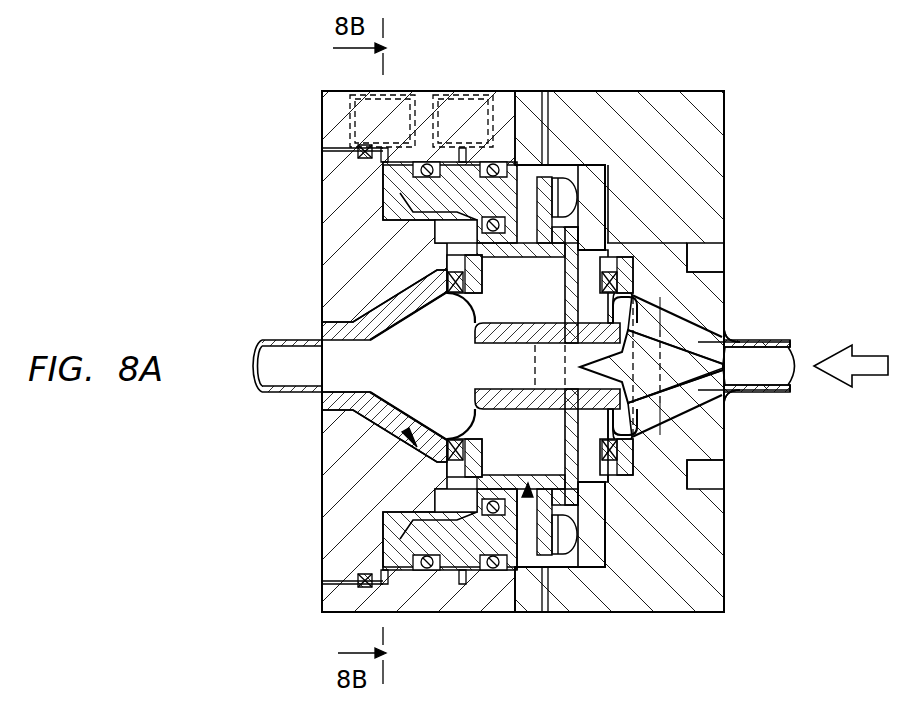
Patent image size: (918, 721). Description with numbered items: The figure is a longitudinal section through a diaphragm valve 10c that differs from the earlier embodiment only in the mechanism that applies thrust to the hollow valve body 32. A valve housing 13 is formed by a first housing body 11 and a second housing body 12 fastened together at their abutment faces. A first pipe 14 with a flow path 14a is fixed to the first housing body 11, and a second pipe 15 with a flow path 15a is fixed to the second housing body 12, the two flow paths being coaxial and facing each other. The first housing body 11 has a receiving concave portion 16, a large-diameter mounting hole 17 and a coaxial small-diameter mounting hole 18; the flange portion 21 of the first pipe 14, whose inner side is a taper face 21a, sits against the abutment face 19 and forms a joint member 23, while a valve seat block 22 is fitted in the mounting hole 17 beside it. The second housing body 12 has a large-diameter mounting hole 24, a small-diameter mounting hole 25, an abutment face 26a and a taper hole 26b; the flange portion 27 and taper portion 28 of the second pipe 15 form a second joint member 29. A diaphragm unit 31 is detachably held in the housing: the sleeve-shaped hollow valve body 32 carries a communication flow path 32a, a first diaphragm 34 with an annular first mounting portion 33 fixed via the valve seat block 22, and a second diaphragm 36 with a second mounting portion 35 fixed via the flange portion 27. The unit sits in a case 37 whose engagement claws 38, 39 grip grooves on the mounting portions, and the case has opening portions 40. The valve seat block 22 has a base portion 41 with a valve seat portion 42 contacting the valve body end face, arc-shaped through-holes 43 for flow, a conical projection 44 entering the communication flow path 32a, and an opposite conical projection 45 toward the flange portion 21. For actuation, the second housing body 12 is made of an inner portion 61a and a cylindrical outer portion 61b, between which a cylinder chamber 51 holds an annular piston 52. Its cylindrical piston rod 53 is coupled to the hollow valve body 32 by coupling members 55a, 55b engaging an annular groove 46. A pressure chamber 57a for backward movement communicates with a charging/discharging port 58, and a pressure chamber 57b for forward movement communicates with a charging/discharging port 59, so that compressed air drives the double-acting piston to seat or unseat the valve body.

The diaphragm valve 10c is at (744, 180).
The first housing body 11 is at (700, 565).
The second housing body 12 is at (360, 225).
The valve housing 13 is at (702, 240).
The first pipe 14 is at (750, 337).
The flow path 14a is at (765, 353).
The second pipe 15 is at (258, 393).
The flow path 15a is at (275, 368).
The receiving concave portion 16 is at (587, 600).
The large-diameter mounting hole 17 is at (623, 96).
The small-diameter mounting hole 18 is at (710, 290).
The abutment face 19 is at (705, 498).
The flange portion 21 is at (700, 462).
The taper face 21a is at (752, 395).
The valve seat block 22 is at (676, 266).
The joint member 23 is at (648, 268).
The large-diameter mounting hole 24 is at (435, 252).
The small-diameter mounting hole 25 is at (340, 396).
The abutment face 26a is at (447, 278).
The taper hole 26b is at (440, 322).
The flange portion 27 is at (400, 508).
The taper portion 28 is at (370, 418).
The second joint member 29 is at (400, 448).
The diaphragm unit 31 is at (518, 550).
The hollow valve body 32 is at (510, 322).
The communication flow path 32a is at (508, 355).
The first mounting portion 33 is at (690, 438).
The first diaphragm 34 is at (625, 300).
The second mounting portion 35 is at (400, 298).
The second diaphragm 36 is at (470, 425).
The case 37 is at (625, 500).
The engagement claw 38 is at (645, 470).
The engagement claw 39 is at (410, 478).
The opening portions 40 is at (560, 268).
The base portion 41 is at (640, 468).
The valve seat portion 42 is at (747, 320).
The through-holes 43 is at (725, 428).
The conical projection 44 is at (537, 373).
The conical projection 45 is at (707, 367).
The annular groove 46 is at (562, 415).
The cylinder chamber 51 is at (385, 165).
The annular piston 52 is at (385, 548).
The cylindrical piston rod 53 is at (430, 188).
The coupling member 55a is at (536, 95).
The coupling member 55b is at (550, 600).
The pressure chamber for backward movement 57a is at (463, 575).
The pressure chamber for forward movement 57b is at (358, 580).
The charging/discharging port 58 is at (472, 82).
The charging/discharging port 59 is at (406, 82).
The inner portion 61a is at (345, 205).
The cylindrical outer portion 61b is at (335, 116).